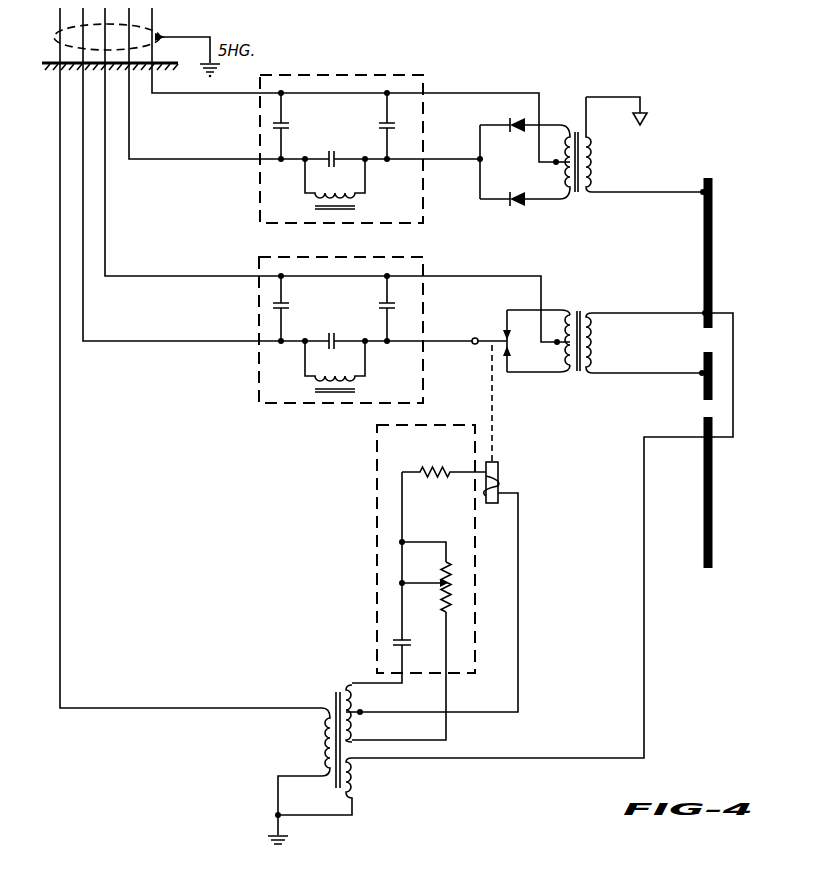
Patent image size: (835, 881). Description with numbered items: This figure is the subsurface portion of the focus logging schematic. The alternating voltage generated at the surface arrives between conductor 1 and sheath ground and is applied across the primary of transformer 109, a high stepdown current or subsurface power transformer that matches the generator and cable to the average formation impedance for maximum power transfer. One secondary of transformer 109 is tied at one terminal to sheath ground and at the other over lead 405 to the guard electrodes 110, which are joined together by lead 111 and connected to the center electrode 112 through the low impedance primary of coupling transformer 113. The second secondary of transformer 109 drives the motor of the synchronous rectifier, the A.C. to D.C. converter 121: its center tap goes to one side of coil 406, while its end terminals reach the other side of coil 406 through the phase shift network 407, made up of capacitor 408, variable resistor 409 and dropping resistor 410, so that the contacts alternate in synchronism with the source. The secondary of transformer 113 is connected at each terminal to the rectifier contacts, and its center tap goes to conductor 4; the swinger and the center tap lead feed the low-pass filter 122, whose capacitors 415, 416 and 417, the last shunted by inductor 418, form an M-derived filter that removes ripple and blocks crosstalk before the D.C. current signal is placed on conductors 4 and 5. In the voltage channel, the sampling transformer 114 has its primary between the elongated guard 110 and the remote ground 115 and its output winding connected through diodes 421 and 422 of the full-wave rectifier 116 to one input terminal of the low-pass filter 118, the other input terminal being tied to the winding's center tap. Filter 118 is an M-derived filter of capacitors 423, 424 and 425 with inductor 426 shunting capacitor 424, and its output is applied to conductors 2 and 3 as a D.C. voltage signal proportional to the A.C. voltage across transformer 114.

The conductor 1 is at (61, 530).
The conductor 2 is at (170, 143).
The conductor 3 is at (206, 96).
The conductor 4 is at (162, 259).
The conductor 5 is at (162, 325).
The transformer 109 is at (333, 694).
The guards 110 is at (712, 244).
The lead 111 is at (734, 346).
The center electrode 112 is at (703, 389).
The coupling transformer 113 is at (581, 311).
The sampling transformer 114 is at (578, 196).
The remote ground 115 is at (643, 116).
The A.C. to D.C. converter 116 is at (517, 171).
The low-pass filter 118 is at (341, 133).
The A.C. to D.C. converter 121 is at (502, 323).
The low-pass filter 122 is at (365, 324).
The lead 405 is at (520, 762).
The coil 406 is at (498, 467).
The phase shift network 407 is at (405, 554).
The capacitor 408 is at (406, 652).
The variable resistor 409 is at (440, 602).
The dropping resistor 410 is at (446, 466).
The capacitor 415 is at (385, 308).
The capacitor 416 is at (287, 303).
The capacitor 417 is at (344, 326).
The inductor 418 is at (358, 389).
The diode 421 is at (516, 118).
The diode 422 is at (514, 208).
The capacitor 423 is at (385, 124).
The capacitor 424 is at (344, 142).
The capacitor 425 is at (287, 115).
The inductor 426 is at (358, 207).